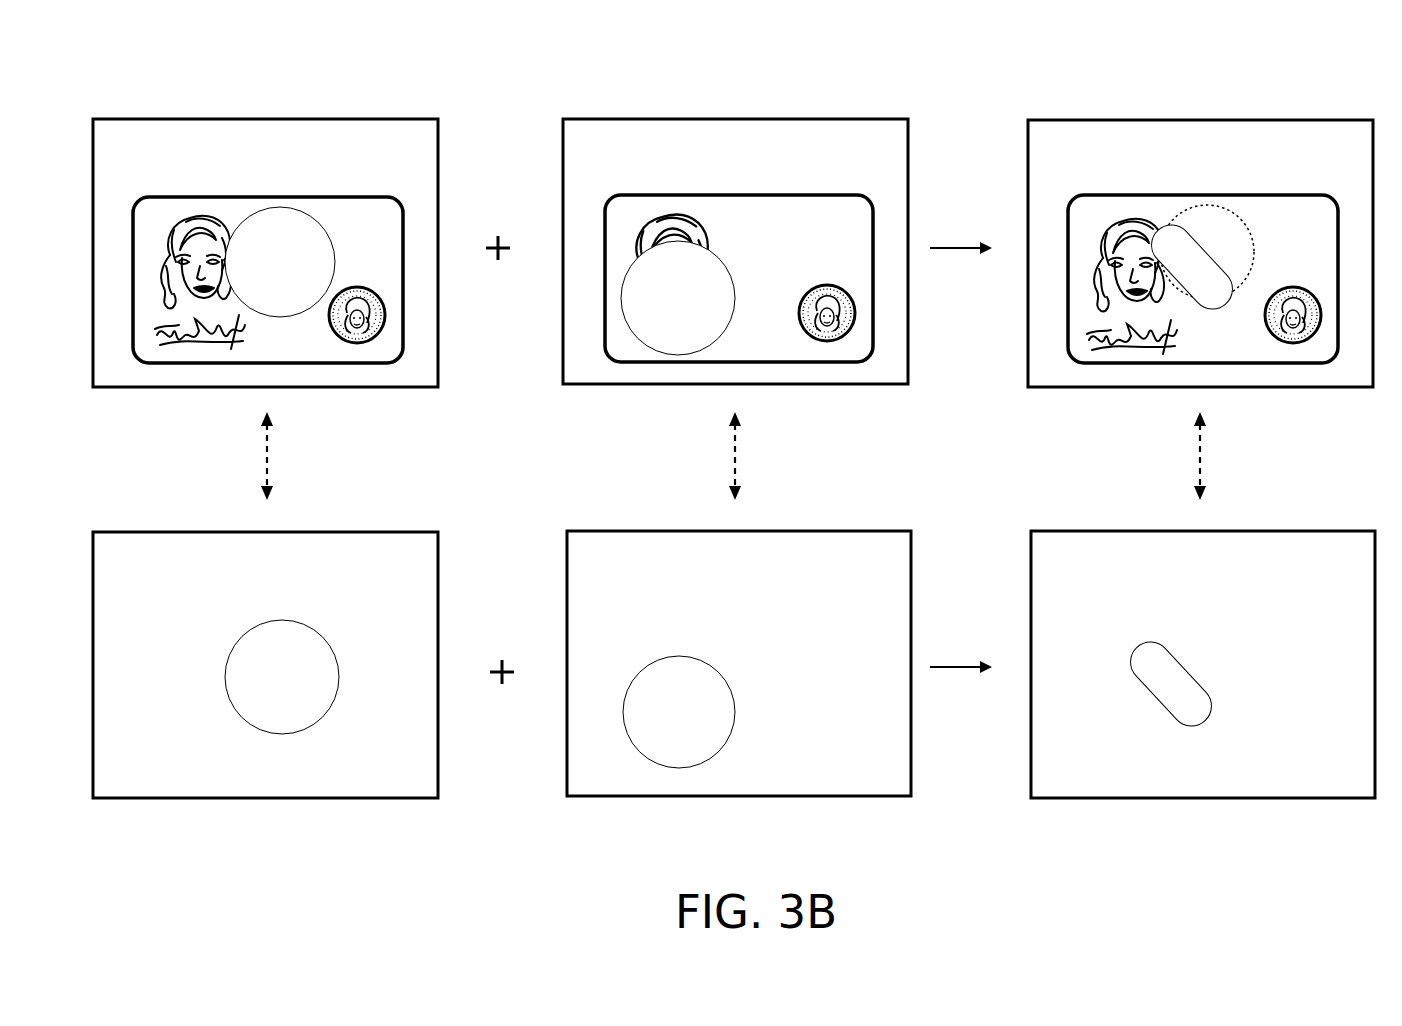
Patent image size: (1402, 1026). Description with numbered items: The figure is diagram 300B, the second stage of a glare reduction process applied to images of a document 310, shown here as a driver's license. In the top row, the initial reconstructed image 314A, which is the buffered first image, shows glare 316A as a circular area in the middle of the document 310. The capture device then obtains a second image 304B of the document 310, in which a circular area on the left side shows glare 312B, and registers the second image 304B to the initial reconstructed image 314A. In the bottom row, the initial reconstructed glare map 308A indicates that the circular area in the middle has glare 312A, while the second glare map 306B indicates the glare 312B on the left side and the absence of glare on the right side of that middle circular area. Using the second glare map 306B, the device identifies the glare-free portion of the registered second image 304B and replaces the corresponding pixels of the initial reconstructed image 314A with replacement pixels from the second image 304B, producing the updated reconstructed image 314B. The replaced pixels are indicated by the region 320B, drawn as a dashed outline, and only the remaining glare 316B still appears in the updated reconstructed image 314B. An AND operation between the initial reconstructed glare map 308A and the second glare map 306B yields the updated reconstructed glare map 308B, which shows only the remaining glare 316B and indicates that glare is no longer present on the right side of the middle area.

The diagram 300B is at (192, 48).
The document 310 is at (188, 197).
The initial reconstructed image 314A is at (322, 122).
The second image 304B is at (726, 120).
The updated reconstructed image 314B is at (1224, 120).
The glare 316A is at (247, 314).
The glare 312B is at (667, 313).
The remaining glare 316B is at (1208, 305).
The region 320B is at (1245, 297).
The initial reconstructed glare map 308A is at (367, 532).
The second glare map 306B is at (785, 530).
The updated reconstructed glare map 308B is at (1248, 532).
The glare 312A is at (262, 733).